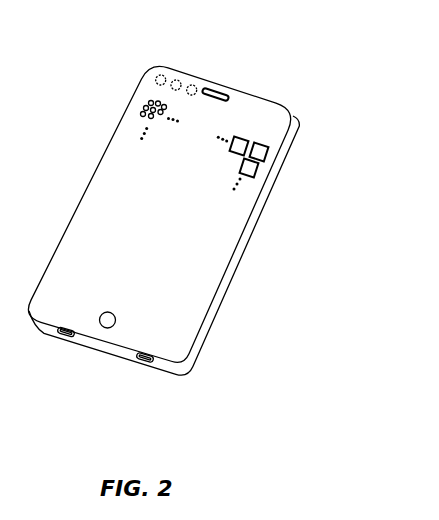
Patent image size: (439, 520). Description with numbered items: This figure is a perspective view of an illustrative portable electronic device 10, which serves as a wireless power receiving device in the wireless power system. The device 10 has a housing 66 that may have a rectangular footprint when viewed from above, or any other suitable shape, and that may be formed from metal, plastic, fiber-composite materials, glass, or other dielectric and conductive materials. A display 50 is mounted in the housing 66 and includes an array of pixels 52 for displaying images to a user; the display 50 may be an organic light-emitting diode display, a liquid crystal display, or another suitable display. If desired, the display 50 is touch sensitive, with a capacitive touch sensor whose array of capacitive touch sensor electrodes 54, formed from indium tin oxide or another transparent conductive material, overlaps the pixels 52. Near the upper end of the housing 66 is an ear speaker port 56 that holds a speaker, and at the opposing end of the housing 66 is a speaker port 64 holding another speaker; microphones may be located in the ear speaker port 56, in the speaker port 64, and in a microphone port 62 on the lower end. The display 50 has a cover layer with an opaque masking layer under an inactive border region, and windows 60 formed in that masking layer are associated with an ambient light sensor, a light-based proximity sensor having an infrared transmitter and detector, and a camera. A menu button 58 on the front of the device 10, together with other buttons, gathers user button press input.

The portable electronic device 10 is at (330, 78).
The display 50 is at (211, 247).
The pixels 52 is at (145, 101).
The capacitive touch sensor electrodes 54 is at (259, 143).
The ear speaker port 56 is at (221, 92).
The menu button 58 is at (106, 329).
The windows 60 is at (192, 84).
The microphone port 62 is at (62, 338).
The speaker port 64 is at (145, 364).
The housing 66 is at (300, 121).